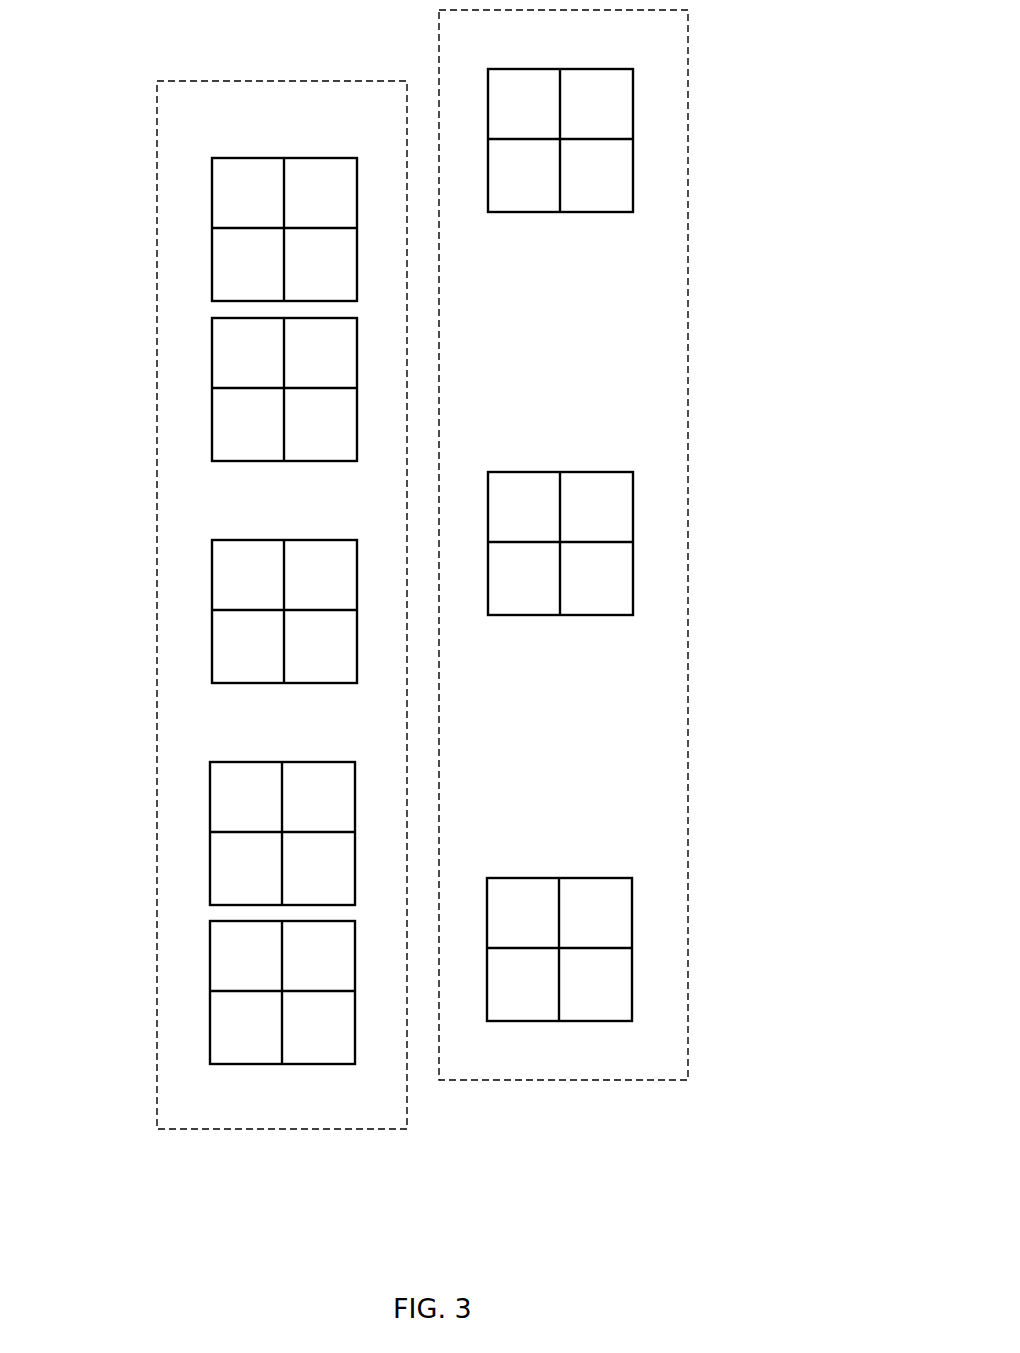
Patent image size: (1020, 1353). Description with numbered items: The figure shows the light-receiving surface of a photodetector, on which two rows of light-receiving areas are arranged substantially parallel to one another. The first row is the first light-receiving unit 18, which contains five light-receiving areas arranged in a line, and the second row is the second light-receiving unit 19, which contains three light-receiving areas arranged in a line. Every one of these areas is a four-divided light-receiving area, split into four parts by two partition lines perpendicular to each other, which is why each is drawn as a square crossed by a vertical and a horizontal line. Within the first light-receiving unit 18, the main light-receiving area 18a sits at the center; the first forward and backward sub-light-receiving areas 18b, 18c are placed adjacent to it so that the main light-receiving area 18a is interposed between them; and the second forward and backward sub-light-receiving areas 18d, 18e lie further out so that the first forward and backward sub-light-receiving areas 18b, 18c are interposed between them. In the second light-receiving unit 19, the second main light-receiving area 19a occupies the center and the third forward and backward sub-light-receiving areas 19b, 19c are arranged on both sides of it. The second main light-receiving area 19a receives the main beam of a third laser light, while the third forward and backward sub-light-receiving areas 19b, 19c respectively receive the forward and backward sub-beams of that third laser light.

The first light-receiving unit 18 is at (287, 1130).
The main light-receiving area 18a is at (203, 611).
The first forward sub-light-receiving area 18b is at (203, 389).
The first backward sub-light-receiving area 18c is at (204, 833).
The second forward sub-light-receiving area 18d is at (202, 229).
The second backward sub-light-receiving area 18e is at (204, 992).
The second light-receiving unit 19 is at (555, 1080).
The second main light-receiving area 19a is at (639, 543).
The third forward sub-light-receiving area 19b is at (639, 140).
The third backward sub-light-receiving area 19c is at (637, 949).